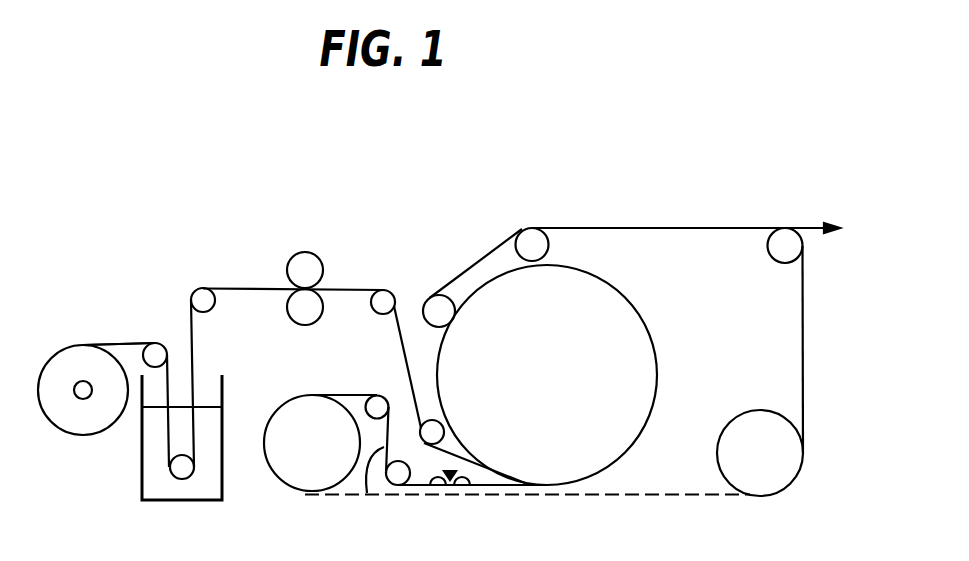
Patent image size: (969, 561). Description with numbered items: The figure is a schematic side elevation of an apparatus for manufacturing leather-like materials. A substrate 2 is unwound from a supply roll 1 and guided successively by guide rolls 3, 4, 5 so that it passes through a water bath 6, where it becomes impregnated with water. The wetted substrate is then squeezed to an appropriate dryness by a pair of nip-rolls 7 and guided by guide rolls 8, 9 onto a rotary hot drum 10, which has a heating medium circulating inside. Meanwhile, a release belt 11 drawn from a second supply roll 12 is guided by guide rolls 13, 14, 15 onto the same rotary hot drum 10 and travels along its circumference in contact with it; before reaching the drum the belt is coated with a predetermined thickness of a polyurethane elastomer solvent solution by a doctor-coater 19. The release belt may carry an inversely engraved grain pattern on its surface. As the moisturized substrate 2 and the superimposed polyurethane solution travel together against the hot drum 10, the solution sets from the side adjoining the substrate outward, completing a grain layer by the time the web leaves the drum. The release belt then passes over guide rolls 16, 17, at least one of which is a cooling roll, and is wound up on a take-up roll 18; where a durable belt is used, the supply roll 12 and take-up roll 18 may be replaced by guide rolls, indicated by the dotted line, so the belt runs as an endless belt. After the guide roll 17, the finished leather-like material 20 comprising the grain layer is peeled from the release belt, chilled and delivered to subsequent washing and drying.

The supply roll 1 is at (82, 397).
The substrate 2 is at (72, 358).
The guide roll 3 is at (155, 352).
The guide roll 4 is at (182, 473).
The guide roll 5 is at (203, 298).
The water bath 6 is at (140, 463).
The nip-rolls 7 is at (315, 268).
The guide roll 8 is at (383, 298).
The guide roll 9 is at (438, 428).
The rotary hot drum 10 is at (634, 354).
The release belt 11 is at (360, 497).
The supply roll 12 is at (312, 473).
The guide roll 13 is at (377, 403).
The guide roll 14 is at (398, 478).
The guide roll 15 is at (440, 307).
The guide roll 16 is at (533, 240).
The guide roll 17 is at (785, 245).
The take-up roll 18 is at (778, 462).
The doctor-coater 19 is at (470, 487).
The leather-like material 20 is at (808, 232).